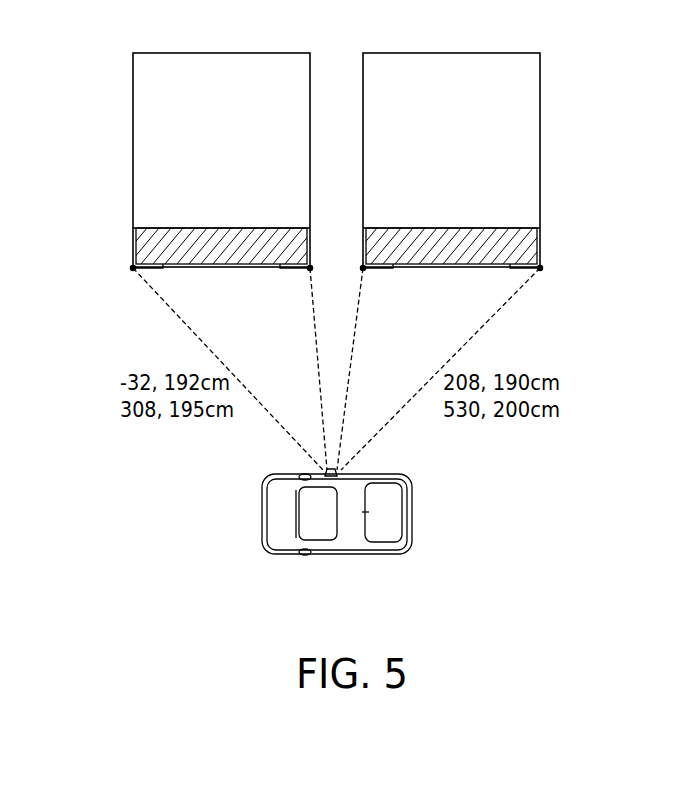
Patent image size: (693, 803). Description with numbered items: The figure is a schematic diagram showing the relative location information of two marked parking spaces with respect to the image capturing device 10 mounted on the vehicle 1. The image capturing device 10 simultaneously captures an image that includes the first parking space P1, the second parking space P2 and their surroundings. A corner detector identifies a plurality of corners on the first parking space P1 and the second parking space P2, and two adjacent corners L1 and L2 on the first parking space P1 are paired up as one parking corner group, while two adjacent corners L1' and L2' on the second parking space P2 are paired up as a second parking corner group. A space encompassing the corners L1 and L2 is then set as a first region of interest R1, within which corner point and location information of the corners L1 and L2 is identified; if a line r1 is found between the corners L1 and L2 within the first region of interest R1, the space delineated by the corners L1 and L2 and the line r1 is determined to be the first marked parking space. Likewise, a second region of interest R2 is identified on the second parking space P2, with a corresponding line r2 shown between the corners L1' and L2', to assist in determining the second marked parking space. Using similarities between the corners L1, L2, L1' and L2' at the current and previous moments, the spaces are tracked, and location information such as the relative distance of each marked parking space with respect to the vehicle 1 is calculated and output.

The vehicle 1 is at (278, 513).
The image capturing device 10 is at (320, 473).
The first parking space P1 is at (231, 60).
The second parking space P2 is at (453, 60).
The first region of interest R1 is at (163, 234).
The second region of interest R2 is at (508, 234).
The corner L1 is at (216, 367).
The corner L2 is at (301, 367).
The corner L1' is at (368, 367).
The corner L2' is at (454, 367).
The line r1 is at (228, 283).
The second width r2 is at (458, 283).